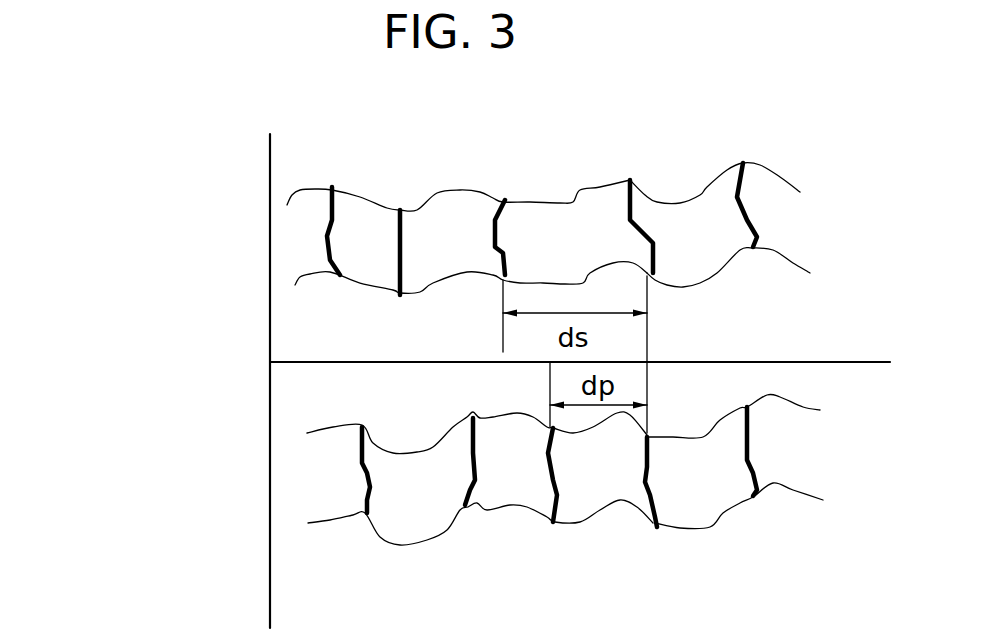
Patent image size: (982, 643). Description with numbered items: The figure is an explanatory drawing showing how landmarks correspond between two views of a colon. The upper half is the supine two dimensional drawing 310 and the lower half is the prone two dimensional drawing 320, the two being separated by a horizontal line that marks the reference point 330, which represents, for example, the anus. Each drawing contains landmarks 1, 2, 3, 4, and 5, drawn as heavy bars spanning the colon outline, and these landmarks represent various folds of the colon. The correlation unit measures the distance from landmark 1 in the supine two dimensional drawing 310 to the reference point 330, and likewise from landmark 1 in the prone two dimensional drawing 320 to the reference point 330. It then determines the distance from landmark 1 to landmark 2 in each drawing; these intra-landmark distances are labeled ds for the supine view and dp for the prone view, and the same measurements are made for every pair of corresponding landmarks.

The supine two dimensional drawing 310 is at (245, 244).
The prone two dimensional drawing 320 is at (245, 490).
The reference point 330 is at (245, 365).
The landmark 1 is at (748, 326).
The landmark 2 is at (641, 354).
The landmark 3 is at (528, 363).
The landmark 4 is at (433, 361).
The landmark 5 is at (347, 351).